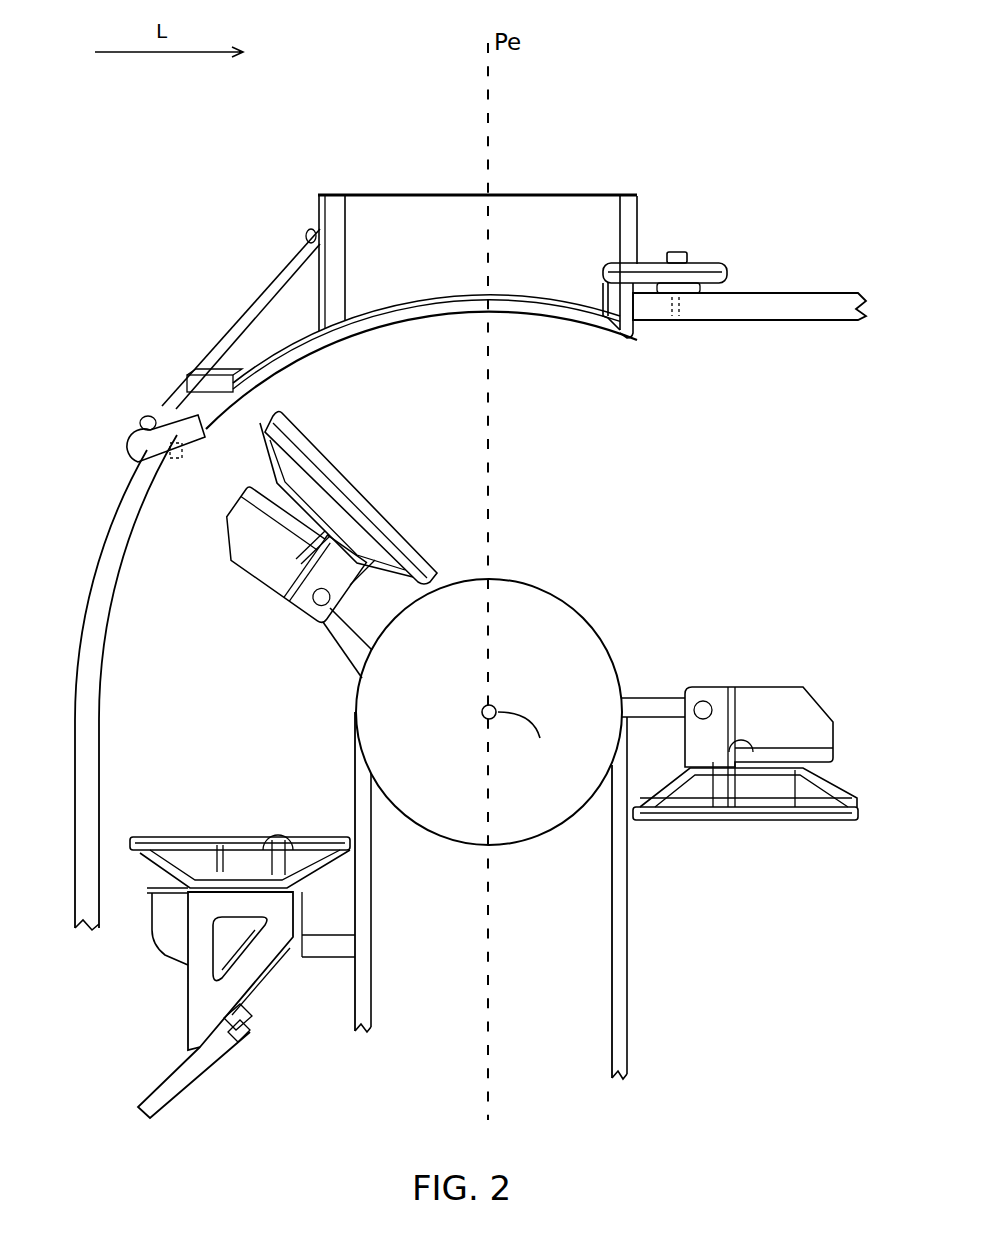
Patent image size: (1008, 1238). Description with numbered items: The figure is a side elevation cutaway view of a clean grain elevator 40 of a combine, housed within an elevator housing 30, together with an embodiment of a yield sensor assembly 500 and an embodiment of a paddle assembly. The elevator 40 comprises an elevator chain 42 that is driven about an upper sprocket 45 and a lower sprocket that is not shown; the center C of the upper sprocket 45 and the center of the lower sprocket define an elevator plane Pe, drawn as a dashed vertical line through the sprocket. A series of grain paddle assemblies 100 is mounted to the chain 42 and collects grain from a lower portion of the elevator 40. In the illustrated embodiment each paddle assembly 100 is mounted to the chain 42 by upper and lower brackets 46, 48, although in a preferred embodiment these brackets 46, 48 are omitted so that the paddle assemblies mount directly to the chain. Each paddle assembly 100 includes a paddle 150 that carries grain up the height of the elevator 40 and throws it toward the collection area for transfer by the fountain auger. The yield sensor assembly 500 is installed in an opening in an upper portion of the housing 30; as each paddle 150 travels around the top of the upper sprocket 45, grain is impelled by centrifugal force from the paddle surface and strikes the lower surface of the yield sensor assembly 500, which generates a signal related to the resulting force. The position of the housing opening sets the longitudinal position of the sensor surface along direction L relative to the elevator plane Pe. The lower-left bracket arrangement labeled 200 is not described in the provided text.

The yield sensor assembly 500 is at (584, 165).
The elevator housing 30 is at (763, 290).
The grain elevator 40 is at (510, 765).
The upper sprocket 45 is at (534, 584).
The grain paddle assembly 100 is at (509, 686).
The paddle 150 is at (785, 822).
The bracket assembly 200 is at (127, 1015).
The elevator chain 42 is at (610, 907).
The upper bracket 46 is at (348, 866).
The lower bracket 48 is at (320, 957).